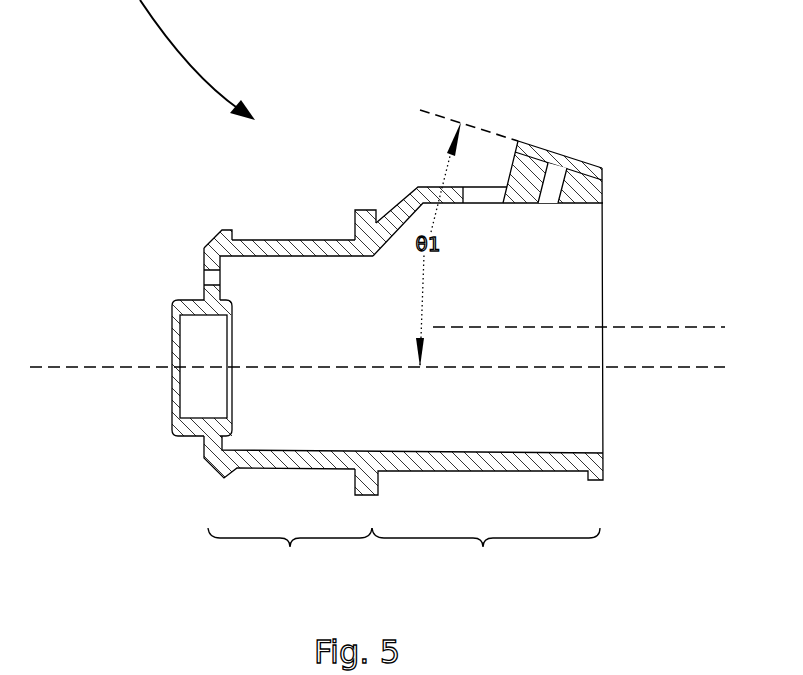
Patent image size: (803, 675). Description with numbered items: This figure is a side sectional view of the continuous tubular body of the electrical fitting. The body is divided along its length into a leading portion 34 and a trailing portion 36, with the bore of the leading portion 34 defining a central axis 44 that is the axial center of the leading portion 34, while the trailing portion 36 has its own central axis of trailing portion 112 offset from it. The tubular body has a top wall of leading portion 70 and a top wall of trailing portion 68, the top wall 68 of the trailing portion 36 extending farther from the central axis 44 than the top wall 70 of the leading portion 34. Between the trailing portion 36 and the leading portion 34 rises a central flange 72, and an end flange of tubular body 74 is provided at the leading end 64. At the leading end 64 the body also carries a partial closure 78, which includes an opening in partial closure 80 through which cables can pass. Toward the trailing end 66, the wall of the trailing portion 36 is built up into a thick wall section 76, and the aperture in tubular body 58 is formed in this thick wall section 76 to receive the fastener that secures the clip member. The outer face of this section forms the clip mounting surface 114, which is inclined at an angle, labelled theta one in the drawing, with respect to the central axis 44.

The leading portion 34 is at (290, 551).
The trailing portion 36 is at (486, 553).
The central axis 44 is at (308, 367).
The aperture in tubular body 58 is at (563, 167).
The leading end 64 is at (202, 446).
The trailing end 66 is at (606, 277).
The top wall of trailing portion 68 is at (427, 187).
The top wall of leading portion 70 is at (262, 240).
The central flange 72 is at (358, 208).
The end flange of tubular body 74 is at (222, 232).
The thick wall section 76 is at (528, 170).
The partial closure 78 is at (218, 302).
The opening in partial closure 80 is at (195, 343).
The central axis of trailing portion 112 is at (433, 327).
The clip mounting surface 114 is at (557, 170).